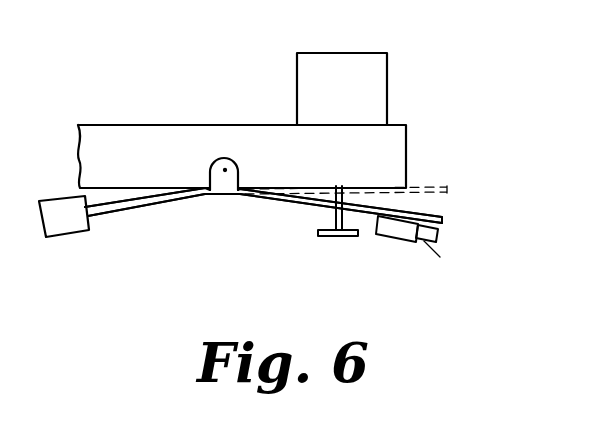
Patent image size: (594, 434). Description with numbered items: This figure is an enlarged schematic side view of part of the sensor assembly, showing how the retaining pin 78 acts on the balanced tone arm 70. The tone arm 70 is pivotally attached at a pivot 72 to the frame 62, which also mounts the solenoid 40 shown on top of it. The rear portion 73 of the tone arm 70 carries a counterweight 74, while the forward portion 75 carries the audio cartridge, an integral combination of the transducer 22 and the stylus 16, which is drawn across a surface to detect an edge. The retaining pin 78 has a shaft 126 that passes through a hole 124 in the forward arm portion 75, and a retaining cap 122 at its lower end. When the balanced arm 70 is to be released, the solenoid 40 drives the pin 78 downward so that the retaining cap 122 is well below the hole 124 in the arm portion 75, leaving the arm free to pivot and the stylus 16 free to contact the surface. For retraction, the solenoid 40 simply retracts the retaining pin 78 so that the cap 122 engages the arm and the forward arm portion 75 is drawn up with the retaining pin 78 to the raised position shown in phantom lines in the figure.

The stylus 16 is at (438, 249).
The transducer 22 is at (397, 238).
The solenoid 40 is at (378, 82).
The frame 62 is at (397, 145).
The balanced tone arm 70 is at (466, 215).
The pivot 72 is at (224, 168).
The rear portion 73 is at (142, 200).
The counterweight 74 is at (67, 237).
The forward portion 75 is at (268, 202).
The retaining pin 78 is at (380, 184).
The retaining cap 122 is at (340, 240).
The hole 124 is at (318, 207).
The shaft 126 is at (338, 186).